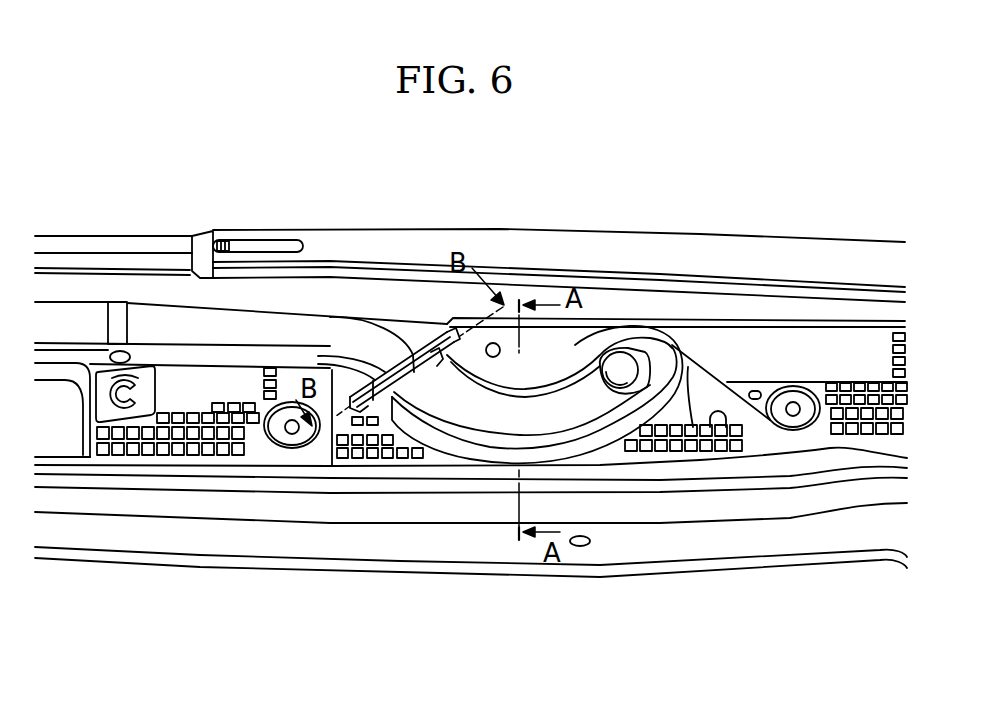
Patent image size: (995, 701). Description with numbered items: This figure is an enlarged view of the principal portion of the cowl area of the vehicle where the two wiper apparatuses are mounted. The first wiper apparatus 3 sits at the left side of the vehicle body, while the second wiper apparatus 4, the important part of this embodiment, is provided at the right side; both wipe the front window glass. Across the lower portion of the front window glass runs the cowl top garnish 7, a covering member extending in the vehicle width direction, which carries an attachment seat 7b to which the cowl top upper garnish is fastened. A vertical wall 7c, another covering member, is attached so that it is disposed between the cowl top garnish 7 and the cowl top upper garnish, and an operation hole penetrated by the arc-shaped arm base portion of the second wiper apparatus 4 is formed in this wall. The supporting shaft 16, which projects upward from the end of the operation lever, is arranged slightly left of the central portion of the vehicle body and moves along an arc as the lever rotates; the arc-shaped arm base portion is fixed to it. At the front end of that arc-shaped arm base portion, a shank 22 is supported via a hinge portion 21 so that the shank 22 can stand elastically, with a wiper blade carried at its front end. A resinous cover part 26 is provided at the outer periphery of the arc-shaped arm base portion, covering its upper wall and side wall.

The first wiper apparatus 3 is at (560, 222).
The second wiper apparatus 4 is at (280, 300).
The cowl top garnish 7 is at (847, 532).
The attachment seat 7b is at (803, 392).
The vertical wall 7c is at (424, 346).
The supporting shaft 16 is at (623, 363).
The hinge portion 21 is at (117, 302).
The shank 22 is at (65, 315).
The cover part 26 is at (563, 417).